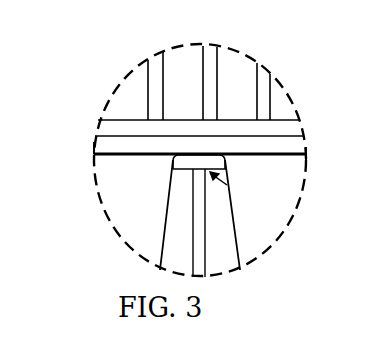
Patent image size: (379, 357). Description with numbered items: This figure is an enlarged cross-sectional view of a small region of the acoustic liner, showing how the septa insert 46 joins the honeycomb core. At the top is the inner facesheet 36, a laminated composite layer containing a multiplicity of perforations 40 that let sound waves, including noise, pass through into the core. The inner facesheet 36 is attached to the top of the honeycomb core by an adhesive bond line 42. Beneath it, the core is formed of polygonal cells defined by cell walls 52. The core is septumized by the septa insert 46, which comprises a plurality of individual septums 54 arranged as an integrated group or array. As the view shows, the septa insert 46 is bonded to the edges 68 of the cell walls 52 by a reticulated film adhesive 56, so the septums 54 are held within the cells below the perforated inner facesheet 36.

The inner facesheet 36 is at (237, 71).
The perforations 40 is at (208, 62).
The adhesive bond line 42 is at (277, 125).
The septa insert 46 is at (303, 154).
The cell walls 52 is at (206, 267).
The septums 54 is at (112, 209).
The reticulated film adhesive 56 is at (187, 166).
The edges 68 is at (227, 185).